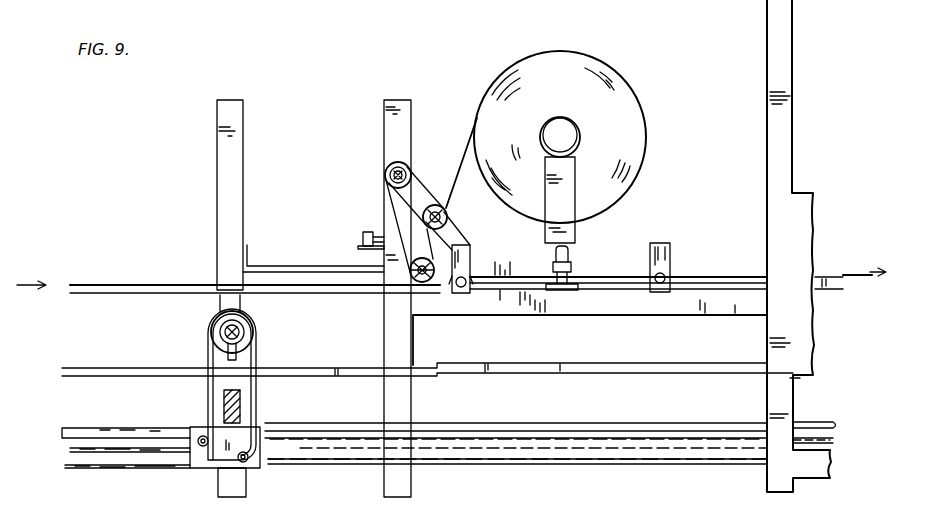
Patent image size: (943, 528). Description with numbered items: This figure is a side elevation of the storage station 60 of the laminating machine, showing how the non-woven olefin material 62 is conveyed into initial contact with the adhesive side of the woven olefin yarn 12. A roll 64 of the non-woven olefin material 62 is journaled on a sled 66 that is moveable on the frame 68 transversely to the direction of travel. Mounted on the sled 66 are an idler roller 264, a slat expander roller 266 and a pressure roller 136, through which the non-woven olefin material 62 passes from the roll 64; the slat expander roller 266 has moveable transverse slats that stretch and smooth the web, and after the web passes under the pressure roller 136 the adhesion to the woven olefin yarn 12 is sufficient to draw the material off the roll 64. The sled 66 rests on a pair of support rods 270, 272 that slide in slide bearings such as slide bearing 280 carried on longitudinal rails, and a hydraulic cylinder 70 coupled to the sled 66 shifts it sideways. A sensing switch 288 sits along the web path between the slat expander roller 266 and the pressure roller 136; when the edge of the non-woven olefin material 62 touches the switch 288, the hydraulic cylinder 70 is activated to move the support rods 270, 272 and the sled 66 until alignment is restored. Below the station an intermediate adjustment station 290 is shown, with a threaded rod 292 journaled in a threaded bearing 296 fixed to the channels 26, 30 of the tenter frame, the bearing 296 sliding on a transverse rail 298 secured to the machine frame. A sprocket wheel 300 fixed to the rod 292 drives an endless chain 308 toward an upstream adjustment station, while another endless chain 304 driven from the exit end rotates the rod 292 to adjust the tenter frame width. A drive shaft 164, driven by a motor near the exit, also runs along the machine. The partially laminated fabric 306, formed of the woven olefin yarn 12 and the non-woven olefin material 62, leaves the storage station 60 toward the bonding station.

The woven olefin yarn 12 is at (80, 283).
The channel 26 is at (140, 284).
The channel 30 is at (104, 370).
The storage station 60 is at (475, 44).
The non-woven olefin material 62 is at (464, 150).
The roll 64 is at (598, 60).
The sled 66 is at (660, 243).
The frame 68 is at (407, 121).
The hydraulic cylinder 70 is at (572, 262).
The pressure roller 136 is at (412, 283).
The drive shaft 164 is at (112, 428).
The idler roller 264 is at (447, 216).
The slat expander roller 266 is at (385, 175).
The support rod 270 is at (656, 290).
The support rod 272 is at (456, 296).
The slide bearing 280 is at (670, 315).
The sensing switch 288 is at (368, 232).
The intermediate adjustment station 290 is at (279, 359).
The threaded rod 292 is at (238, 327).
The threaded bearing 296 is at (208, 352).
The transverse rail 298 is at (222, 405).
The sprocket wheel 300 is at (256, 336).
The endless chain 304 is at (560, 466).
The partially laminated fabric 306 is at (850, 272).
The endless chain 308 is at (150, 470).